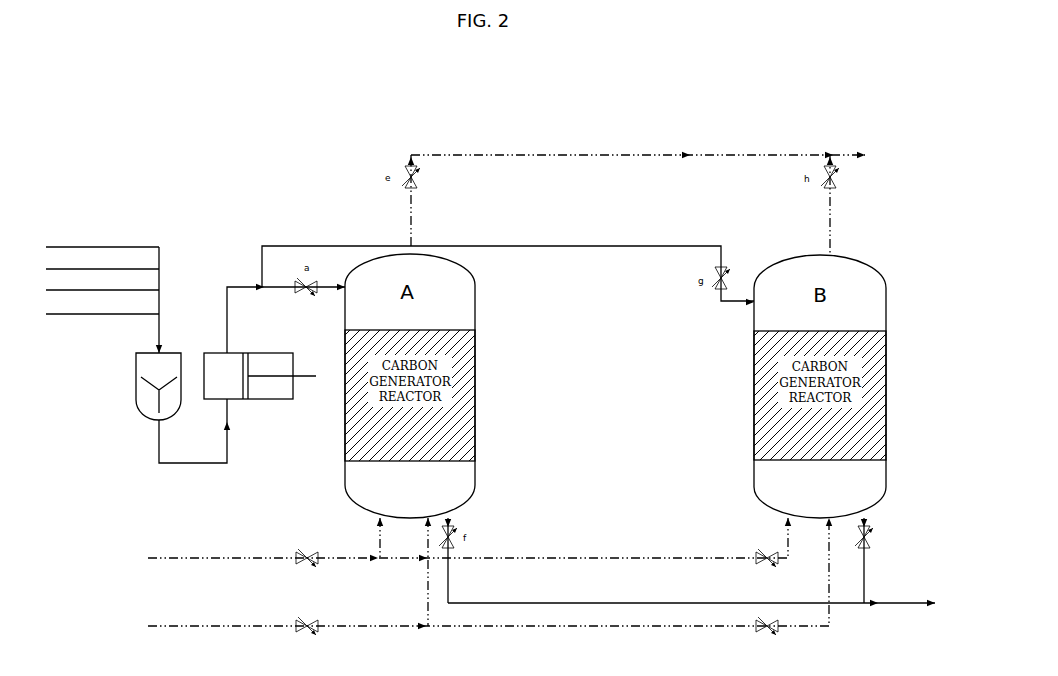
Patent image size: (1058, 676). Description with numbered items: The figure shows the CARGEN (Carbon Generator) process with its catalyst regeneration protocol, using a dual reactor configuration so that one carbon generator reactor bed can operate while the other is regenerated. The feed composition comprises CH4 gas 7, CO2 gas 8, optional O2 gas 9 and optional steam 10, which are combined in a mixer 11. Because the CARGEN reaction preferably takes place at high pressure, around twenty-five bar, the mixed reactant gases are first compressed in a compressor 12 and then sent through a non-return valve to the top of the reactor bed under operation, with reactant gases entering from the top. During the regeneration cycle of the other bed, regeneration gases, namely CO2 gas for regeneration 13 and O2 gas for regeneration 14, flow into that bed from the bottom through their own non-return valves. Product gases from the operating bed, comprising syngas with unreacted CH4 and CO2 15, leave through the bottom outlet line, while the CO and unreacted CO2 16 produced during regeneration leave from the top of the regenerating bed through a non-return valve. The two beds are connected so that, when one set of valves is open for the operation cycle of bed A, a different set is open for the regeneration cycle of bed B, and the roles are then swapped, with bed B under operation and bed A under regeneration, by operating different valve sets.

The CH4 gas 7 is at (78, 244).
The CO2 gas 8 is at (78, 266).
The O2 gas (optional) 9 is at (78, 288).
The steam (optional) 10 is at (78, 311).
The mixer 11 is at (136, 398).
The compressor 12 is at (248, 333).
The CO2 gas for regeneration 13 is at (217, 556).
The O2 gas for regeneration 14 is at (217, 622).
The syngas with unreacted CH4 and CO2 15 is at (708, 600).
The CO and unreacted CO2 16 is at (686, 153).